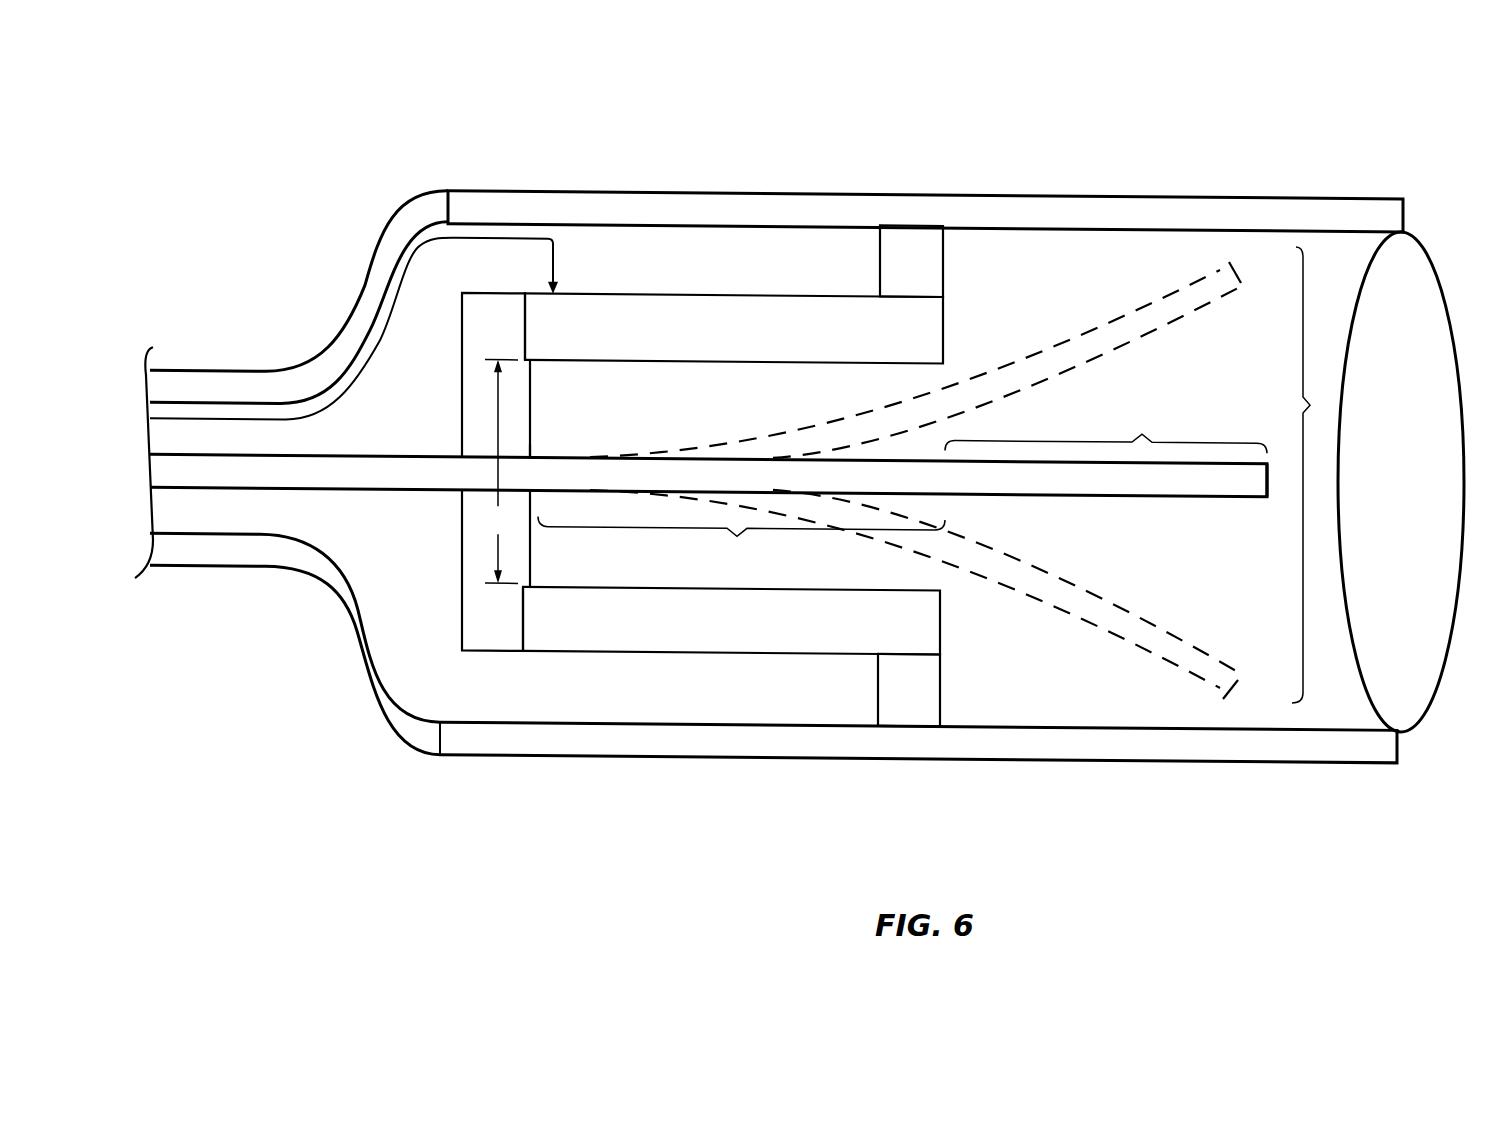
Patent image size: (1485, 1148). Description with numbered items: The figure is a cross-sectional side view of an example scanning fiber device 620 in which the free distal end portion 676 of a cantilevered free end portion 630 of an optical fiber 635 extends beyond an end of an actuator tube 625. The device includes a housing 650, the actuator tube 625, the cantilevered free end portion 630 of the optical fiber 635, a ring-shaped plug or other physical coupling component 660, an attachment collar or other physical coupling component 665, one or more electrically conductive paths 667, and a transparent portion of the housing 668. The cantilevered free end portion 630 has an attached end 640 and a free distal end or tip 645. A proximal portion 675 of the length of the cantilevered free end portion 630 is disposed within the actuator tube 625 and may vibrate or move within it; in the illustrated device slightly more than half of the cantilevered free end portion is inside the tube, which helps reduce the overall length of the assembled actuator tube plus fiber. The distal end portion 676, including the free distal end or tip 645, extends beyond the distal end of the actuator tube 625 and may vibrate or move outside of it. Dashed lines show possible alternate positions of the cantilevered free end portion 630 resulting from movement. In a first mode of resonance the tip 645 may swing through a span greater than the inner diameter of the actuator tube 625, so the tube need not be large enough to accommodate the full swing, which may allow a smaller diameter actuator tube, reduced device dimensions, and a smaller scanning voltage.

The scanning fiber device 620 is at (799, 438).
The housing 650 is at (1038, 785).
The actuator tube 625 is at (752, 635).
The attachment collar 665 is at (943, 247).
The ring-shaped plug 660 is at (516, 323).
The electrically conductive paths 667 is at (377, 374).
The optical fiber 635 is at (387, 485).
The attached end 640 is at (540, 440).
The cantilevered free end portion 630 is at (1043, 484).
The free distal end or tip 645 is at (1268, 469).
The proximal portion 675 is at (741, 544).
The free distal end portion 676 is at (1106, 429).
The transparent portion of the housing 668 is at (1420, 492).